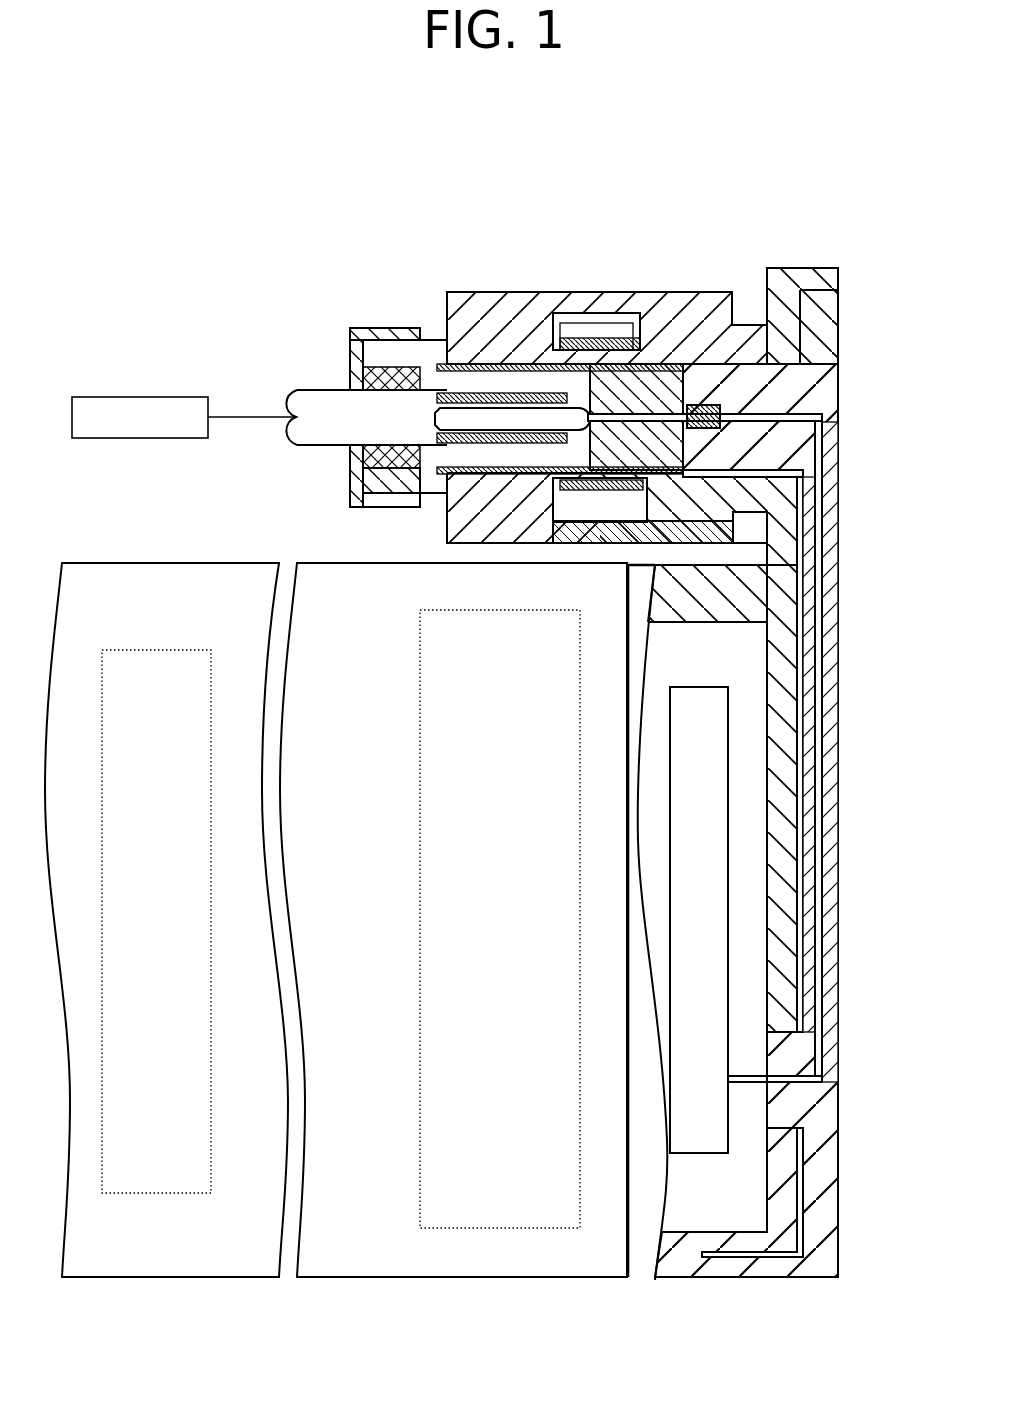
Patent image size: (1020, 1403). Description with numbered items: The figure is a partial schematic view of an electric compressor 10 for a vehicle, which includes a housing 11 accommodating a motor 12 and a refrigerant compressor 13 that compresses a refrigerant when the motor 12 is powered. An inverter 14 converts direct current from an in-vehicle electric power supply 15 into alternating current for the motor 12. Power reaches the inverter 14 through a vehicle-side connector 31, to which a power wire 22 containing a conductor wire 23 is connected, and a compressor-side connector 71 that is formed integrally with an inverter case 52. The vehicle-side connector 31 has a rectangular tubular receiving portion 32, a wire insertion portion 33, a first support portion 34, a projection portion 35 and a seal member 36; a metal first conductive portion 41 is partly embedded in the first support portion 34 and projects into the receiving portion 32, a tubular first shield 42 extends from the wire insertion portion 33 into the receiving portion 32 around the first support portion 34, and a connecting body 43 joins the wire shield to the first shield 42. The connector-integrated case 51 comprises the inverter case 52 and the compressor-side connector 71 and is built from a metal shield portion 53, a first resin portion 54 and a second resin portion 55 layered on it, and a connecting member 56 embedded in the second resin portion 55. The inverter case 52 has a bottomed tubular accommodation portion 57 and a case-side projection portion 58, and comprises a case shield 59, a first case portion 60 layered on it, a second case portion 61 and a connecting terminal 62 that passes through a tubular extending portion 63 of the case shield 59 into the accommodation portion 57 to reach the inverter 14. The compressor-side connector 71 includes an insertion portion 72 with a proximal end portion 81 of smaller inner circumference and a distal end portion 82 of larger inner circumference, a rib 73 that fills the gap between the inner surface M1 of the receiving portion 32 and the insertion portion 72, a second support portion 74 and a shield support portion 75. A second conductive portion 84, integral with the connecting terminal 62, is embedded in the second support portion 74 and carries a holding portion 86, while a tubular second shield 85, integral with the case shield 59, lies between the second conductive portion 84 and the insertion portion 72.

The electric compressor 10 is at (166, 880).
The housing 11 is at (176, 561).
The motor 12 is at (405, 1020).
The refrigerant compressor 13 is at (212, 1078).
The inverter 14 is at (642, 872).
The in-vehicle electric power supply 15 is at (140, 394).
The power wire 22 is at (296, 388).
The conductor wire 23 is at (433, 410).
The vehicle-side connector 31 is at (573, 619).
The receiving portion 32 is at (594, 300).
The wire insertion portion 33 is at (511, 305).
The first support portion 34 is at (672, 335).
The projection portion 35 is at (617, 332).
The seal member 36 is at (551, 330).
The first conductive portion 41 is at (570, 335).
The first shield 42 is at (474, 335).
The connecting body 43 is at (438, 480).
The connector-integrated case 51 is at (846, 323).
The inverter case 52 is at (746, 754).
The shield portion 53 is at (818, 586).
The first resin portion 54 is at (768, 645).
The second resin portion 55 is at (833, 416).
The connecting member 56 is at (820, 520).
The accommodation portion 57 is at (838, 930).
The case-side projection portion 58 is at (838, 490).
The case shield 59 is at (805, 690).
The first case portion 60 is at (768, 775).
The second case portion 61 is at (818, 891).
The connecting terminal 62 is at (818, 1000).
The extending portion 63 is at (768, 1138).
The compressor-side connector 71 is at (749, 318).
The insertion portion 72 is at (577, 510).
The rib 73 is at (688, 548).
The second support portion 74 is at (698, 332).
The shield support portion 75 is at (613, 520).
The proximal end portion 81 is at (735, 305).
The distal end portion 82 is at (548, 505).
The second conductive portion 84 is at (803, 382).
The second shield 85 is at (792, 318).
The holding portion 86 is at (806, 453).
The inner surface of the receiving portion M1 is at (651, 300).